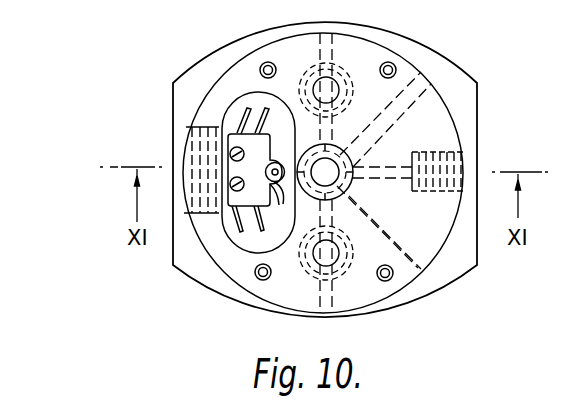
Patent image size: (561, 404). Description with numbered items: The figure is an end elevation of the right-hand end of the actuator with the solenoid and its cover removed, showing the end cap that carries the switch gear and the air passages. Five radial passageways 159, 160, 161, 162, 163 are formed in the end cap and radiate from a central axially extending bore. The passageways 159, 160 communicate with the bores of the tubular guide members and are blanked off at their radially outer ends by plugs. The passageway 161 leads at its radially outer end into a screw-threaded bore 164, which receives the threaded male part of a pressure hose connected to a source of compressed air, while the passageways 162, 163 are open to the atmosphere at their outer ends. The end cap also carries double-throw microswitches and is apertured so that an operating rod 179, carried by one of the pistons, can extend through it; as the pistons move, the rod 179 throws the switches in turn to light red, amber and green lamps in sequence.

The radial passageway 159 is at (334, 34).
The radial passageway 160 is at (334, 294).
The radial passageway 161 is at (392, 168).
The radial passageway 162 is at (406, 101).
The radial passageway 163 is at (416, 266).
The screw-threaded bore 164 is at (436, 188).
The operating rod 179 is at (259, 204).